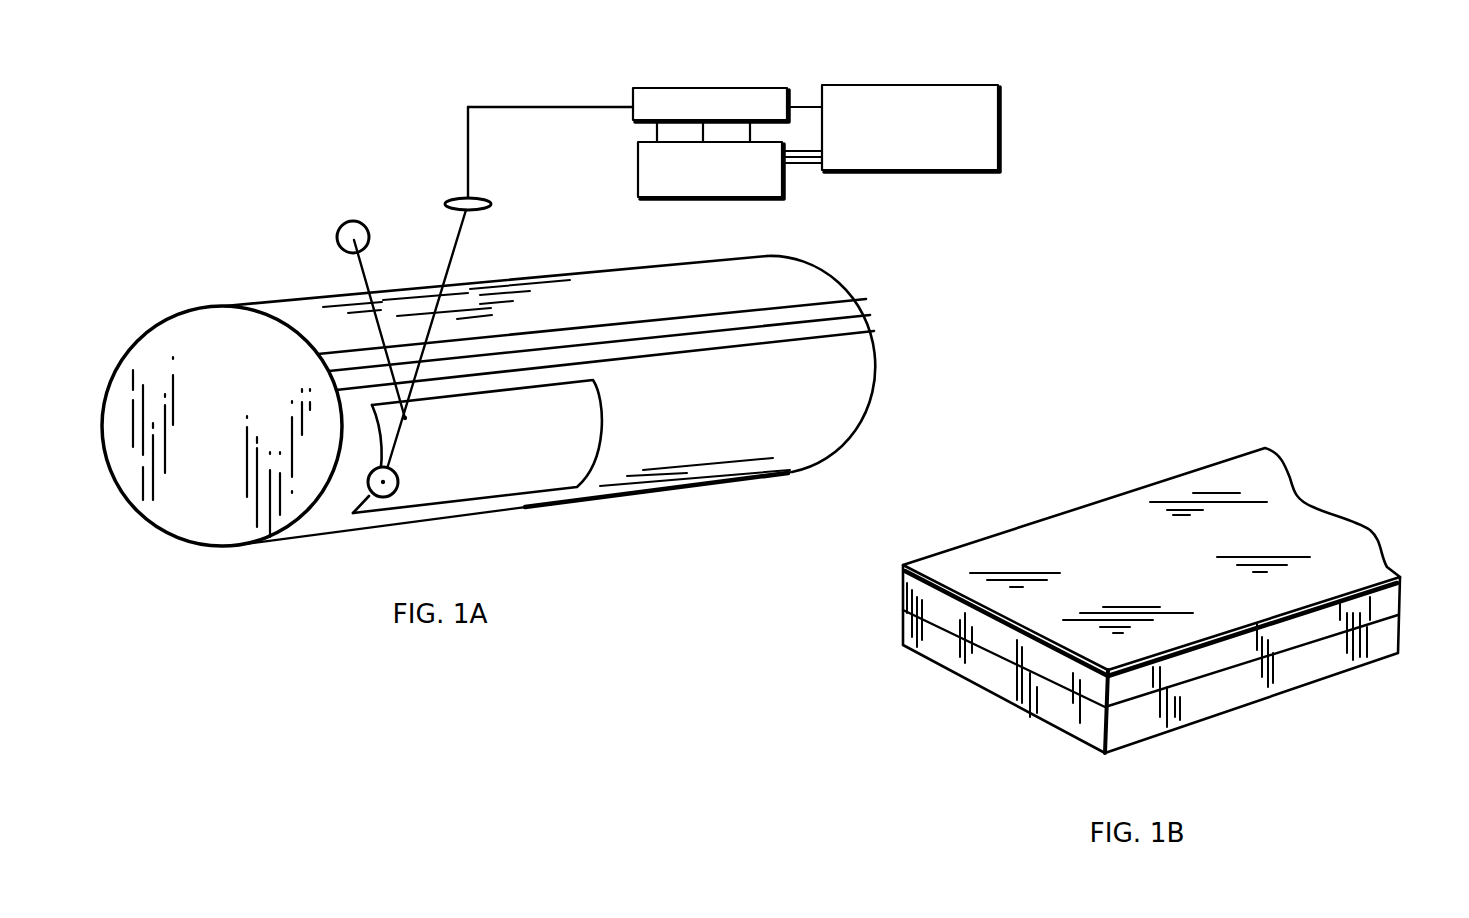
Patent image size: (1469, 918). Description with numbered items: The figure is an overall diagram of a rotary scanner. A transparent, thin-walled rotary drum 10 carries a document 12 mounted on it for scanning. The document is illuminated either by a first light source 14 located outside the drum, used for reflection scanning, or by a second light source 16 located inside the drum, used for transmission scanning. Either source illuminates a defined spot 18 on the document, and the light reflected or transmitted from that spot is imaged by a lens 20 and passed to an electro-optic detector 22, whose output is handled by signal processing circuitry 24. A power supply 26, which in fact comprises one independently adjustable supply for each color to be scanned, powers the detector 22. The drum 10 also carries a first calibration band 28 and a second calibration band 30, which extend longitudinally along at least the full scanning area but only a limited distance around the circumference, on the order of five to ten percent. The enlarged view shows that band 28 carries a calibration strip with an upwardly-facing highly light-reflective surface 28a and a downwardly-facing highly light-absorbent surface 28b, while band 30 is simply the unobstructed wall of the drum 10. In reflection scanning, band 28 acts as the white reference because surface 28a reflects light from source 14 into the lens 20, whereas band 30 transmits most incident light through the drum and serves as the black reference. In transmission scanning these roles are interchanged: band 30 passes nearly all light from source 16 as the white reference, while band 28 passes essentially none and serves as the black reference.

In FIG. 1A, the transparent rotary thin-walled drum 10 is at (718, 430).
In FIG. 1A, the document 12 is at (514, 452).
In FIG. 1A, the first light source 14 is at (350, 222).
In FIG. 1A, the second light source 16 is at (369, 480).
In FIG. 1A, the defined spot 18 is at (405, 418).
In FIG. 1A, the lens 20 is at (476, 196).
In FIG. 1A, the electro-optic detector 22 is at (687, 88).
In FIG. 1A, the signal processing circuitry 24 is at (868, 85).
In FIG. 1A, the power supply 26 is at (638, 160).
In FIG. 1A, the first calibration band 28 is at (753, 316).
In FIG. 1B, the first calibration band 28 is at (1112, 562).
In FIG. 1B, the highly light-reflective surface 28a is at (906, 595).
In FIG. 1B, the highly light-absorbent surface 28b is at (932, 650).
In FIG. 1A, the second calibration band 30 is at (737, 337).